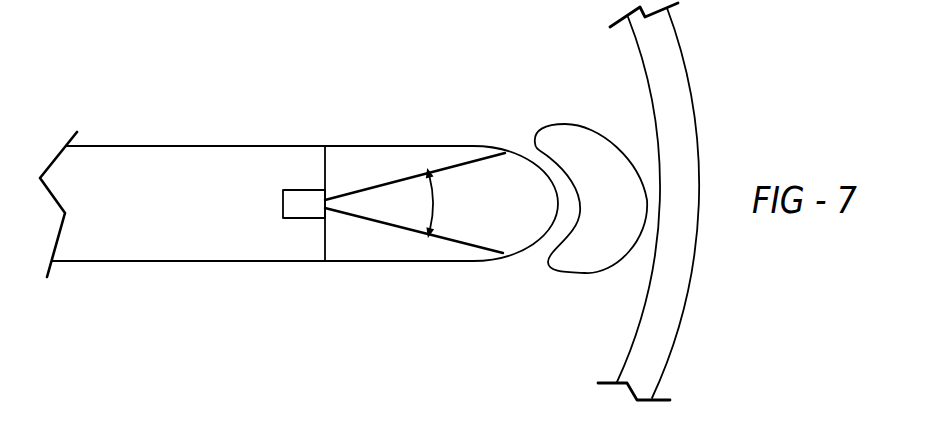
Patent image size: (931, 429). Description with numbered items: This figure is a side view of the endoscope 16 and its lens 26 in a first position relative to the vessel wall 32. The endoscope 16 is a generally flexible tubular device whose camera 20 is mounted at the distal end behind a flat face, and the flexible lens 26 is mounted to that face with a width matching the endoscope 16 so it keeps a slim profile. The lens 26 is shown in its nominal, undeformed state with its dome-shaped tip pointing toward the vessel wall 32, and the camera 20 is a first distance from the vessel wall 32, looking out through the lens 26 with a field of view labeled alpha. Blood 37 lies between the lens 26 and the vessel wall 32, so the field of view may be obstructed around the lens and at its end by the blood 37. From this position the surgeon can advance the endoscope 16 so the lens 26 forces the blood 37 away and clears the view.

The endoscope 16 is at (153, 146).
The camera 20 is at (295, 190).
The flexible lens 26 is at (367, 146).
The vessel wall 32 is at (667, 83).
The blood 37 is at (567, 275).